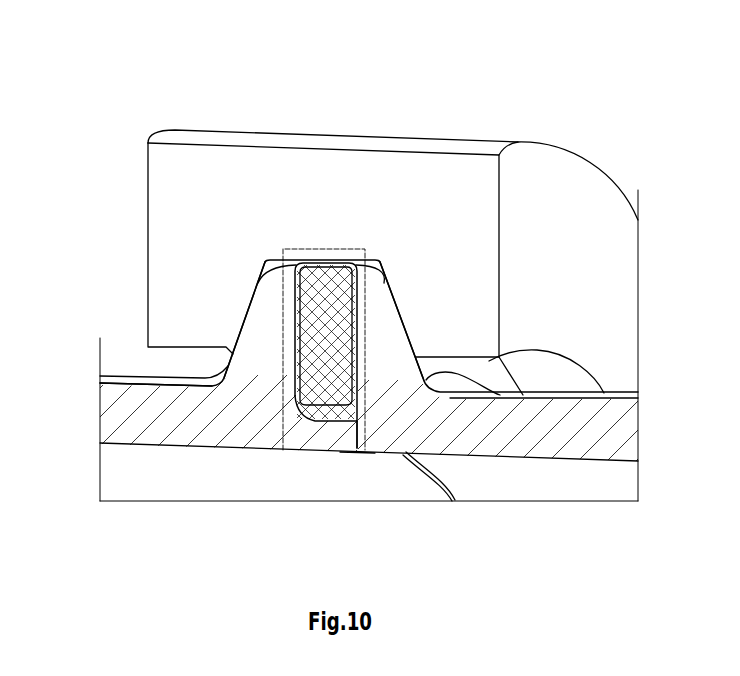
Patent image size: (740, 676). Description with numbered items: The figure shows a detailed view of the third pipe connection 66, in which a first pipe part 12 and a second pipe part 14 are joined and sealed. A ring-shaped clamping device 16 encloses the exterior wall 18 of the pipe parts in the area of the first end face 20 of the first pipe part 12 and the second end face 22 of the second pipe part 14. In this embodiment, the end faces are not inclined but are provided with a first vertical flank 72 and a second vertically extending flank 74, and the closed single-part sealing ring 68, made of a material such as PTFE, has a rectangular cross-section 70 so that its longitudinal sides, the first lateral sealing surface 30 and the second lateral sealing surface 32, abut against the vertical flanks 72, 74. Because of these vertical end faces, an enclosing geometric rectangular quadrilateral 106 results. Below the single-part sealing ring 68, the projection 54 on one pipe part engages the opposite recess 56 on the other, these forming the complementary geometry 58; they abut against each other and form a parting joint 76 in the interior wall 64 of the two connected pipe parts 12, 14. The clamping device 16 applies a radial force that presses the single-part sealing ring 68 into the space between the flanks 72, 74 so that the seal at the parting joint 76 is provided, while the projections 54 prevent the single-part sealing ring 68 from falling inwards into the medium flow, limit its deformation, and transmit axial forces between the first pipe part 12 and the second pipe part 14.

The third pipe connection 66 is at (128, 126).
The clamping device 16 is at (370, 137).
The enclosing geometric rectangular quadrilateral 106 is at (385, 277).
The single-part sealing ring 68 is at (323, 247).
The rectangular cross-section 70 is at (325, 258).
The first end face 20 is at (283, 318).
The first vertical flank 72 is at (283, 318).
The second end face 22 is at (362, 276).
The second vertically extending flank 74 is at (352, 316).
The first lateral sealing surface 30 is at (283, 360).
The second lateral sealing surface 32 is at (355, 378).
The exterior wall 18 is at (138, 380).
The first pipe part 12 is at (190, 444).
The second pipe part 14 is at (495, 458).
The interior wall 64 is at (136, 478).
The recess 56 is at (343, 433).
The projection 54 is at (362, 453).
The complementary geometry 58 is at (357, 462).
The parting joint 76 is at (432, 487).